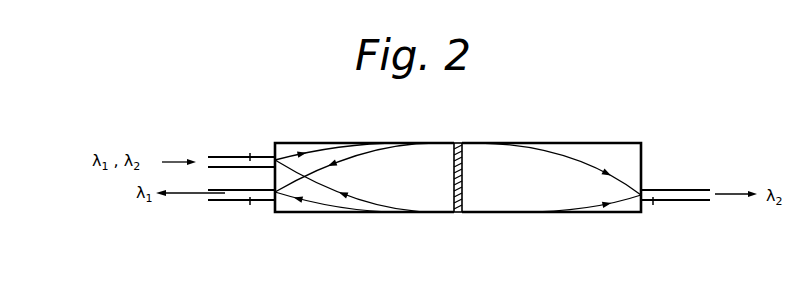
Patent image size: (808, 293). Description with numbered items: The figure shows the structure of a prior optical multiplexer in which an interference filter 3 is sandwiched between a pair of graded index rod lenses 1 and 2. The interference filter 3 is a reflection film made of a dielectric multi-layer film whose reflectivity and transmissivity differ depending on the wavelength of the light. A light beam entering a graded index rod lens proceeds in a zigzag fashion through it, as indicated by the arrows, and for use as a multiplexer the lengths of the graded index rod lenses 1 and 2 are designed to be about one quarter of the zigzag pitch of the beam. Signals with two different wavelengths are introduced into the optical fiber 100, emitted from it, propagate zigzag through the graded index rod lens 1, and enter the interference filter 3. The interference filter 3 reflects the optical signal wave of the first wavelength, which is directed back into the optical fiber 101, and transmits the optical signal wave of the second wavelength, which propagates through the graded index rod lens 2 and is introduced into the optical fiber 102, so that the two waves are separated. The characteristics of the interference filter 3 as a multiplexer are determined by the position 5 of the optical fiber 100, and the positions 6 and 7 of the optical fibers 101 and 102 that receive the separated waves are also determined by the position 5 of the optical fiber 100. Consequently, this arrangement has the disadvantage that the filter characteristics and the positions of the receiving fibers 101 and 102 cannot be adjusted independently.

The graded index rod lens 1 is at (362, 136).
The graded index rod lens 2 is at (566, 137).
The interference filter 3 is at (459, 136).
The position of the fiber 5 is at (250, 151).
The position of the optical fiber 6 is at (250, 208).
The position of the optical fiber 7 is at (654, 211).
The optical fiber 100 is at (213, 151).
The optical fiber 101 is at (216, 206).
The optical fiber 102 is at (691, 210).